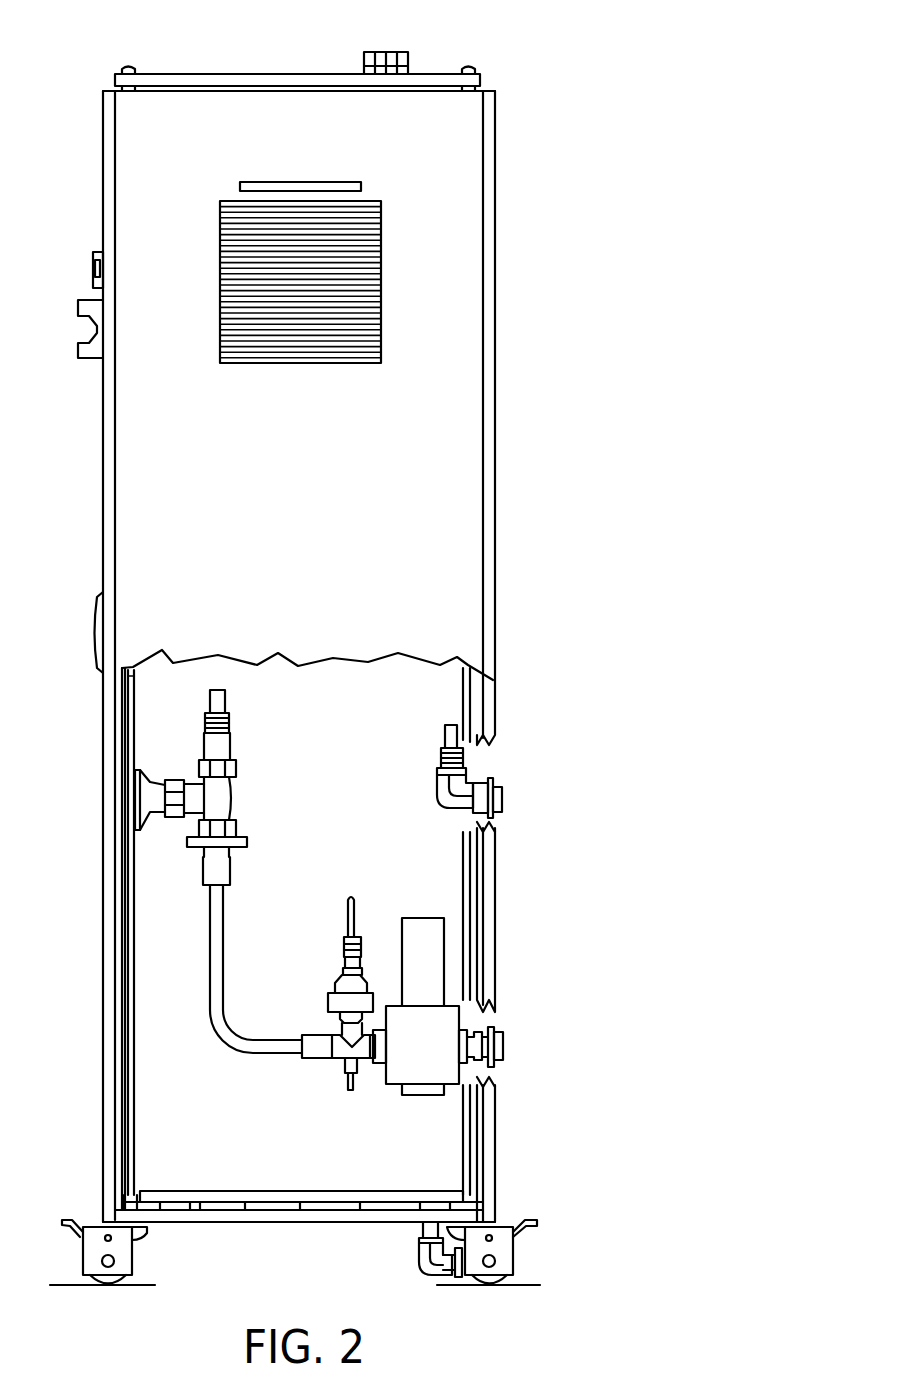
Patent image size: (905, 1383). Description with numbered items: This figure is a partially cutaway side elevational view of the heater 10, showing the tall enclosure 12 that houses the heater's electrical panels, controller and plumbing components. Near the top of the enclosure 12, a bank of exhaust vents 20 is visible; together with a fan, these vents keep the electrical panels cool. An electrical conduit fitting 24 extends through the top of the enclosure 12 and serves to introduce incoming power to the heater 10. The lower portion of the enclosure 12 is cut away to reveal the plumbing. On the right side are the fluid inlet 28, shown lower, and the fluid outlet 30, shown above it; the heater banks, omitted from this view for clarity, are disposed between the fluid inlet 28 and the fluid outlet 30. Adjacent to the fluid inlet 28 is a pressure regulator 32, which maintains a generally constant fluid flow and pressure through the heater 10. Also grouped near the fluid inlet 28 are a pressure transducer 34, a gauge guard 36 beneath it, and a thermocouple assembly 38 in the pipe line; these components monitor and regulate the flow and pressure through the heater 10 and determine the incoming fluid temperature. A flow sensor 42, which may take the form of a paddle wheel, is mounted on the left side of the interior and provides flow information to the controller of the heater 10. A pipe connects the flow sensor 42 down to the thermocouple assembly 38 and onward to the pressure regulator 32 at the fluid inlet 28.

The heater 10 is at (556, 360).
The enclosure 12 is at (452, 133).
The exhaust vents 20 is at (280, 310).
The electrical conduit fitting 24 is at (398, 50).
The fluid inlet 28 is at (503, 1047).
The fluid outlet 30 is at (503, 800).
The pressure regulator 32 is at (422, 1059).
The pressure transducer 34 is at (345, 948).
The gauge guard 36 is at (328, 1003).
The thermocouple assembly 38 is at (340, 1050).
The flow sensor 42 is at (176, 783).